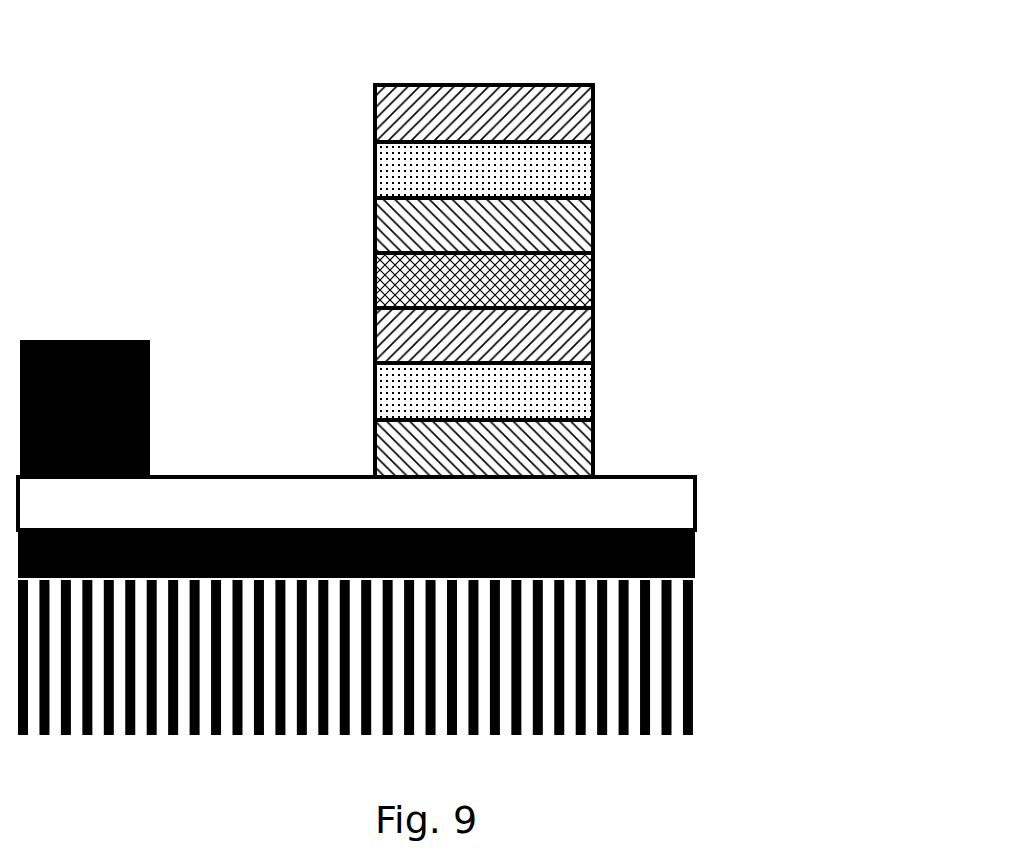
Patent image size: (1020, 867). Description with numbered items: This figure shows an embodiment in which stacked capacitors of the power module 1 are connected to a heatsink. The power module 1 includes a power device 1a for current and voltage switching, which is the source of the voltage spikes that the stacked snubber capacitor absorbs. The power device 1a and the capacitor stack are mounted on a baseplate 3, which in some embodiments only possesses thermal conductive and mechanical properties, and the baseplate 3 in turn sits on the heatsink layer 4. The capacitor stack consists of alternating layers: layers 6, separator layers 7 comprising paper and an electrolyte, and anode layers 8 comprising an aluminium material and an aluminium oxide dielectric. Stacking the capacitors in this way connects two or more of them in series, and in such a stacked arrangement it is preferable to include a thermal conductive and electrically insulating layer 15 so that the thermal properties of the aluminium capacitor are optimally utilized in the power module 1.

The power module 1 is at (814, 53).
The power device 1a is at (77, 340).
The baseplate 3 is at (695, 508).
The second layer 4 is at (695, 553).
The first type layers of the stack 6 is at (593, 312).
The separator layer 7 is at (593, 387).
The anode layer 8 is at (593, 447).
The thermal conductive and electrically insulating layer 15 is at (495, 281).